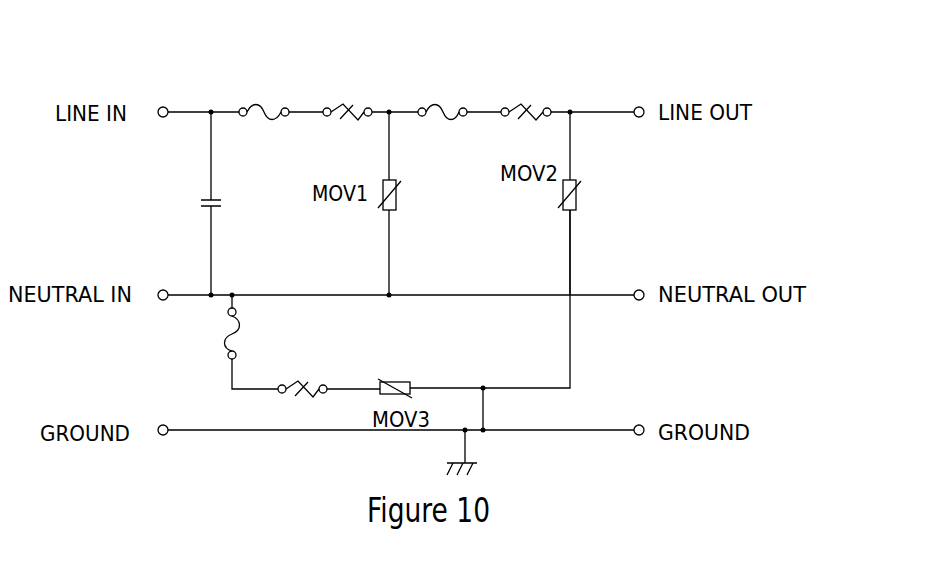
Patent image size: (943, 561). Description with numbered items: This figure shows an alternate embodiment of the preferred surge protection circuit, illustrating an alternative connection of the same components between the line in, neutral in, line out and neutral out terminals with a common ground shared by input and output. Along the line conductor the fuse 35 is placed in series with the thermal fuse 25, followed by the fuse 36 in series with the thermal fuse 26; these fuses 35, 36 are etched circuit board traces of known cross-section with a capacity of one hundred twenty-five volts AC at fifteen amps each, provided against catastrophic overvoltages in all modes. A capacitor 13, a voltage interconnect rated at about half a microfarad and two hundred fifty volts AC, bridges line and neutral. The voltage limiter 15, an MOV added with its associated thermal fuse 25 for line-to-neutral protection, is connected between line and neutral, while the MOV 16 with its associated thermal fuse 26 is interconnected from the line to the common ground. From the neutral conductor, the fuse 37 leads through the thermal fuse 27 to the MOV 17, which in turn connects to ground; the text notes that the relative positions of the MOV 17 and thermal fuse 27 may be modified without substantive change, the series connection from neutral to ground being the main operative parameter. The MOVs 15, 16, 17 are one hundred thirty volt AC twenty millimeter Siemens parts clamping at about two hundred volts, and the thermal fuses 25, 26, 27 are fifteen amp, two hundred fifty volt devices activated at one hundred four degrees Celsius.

The capacitor 13 is at (233, 203).
The voltage limiter 15 is at (403, 193).
The MOV 16 is at (582, 193).
The MOV 17 is at (393, 372).
The thermal fuse 25 is at (349, 91).
The thermal fuse 26 is at (526, 91).
The thermal fuse 27 is at (303, 375).
The fuse 35 is at (259, 91).
The fuse 36 is at (450, 91).
The fuse 37 is at (243, 341).